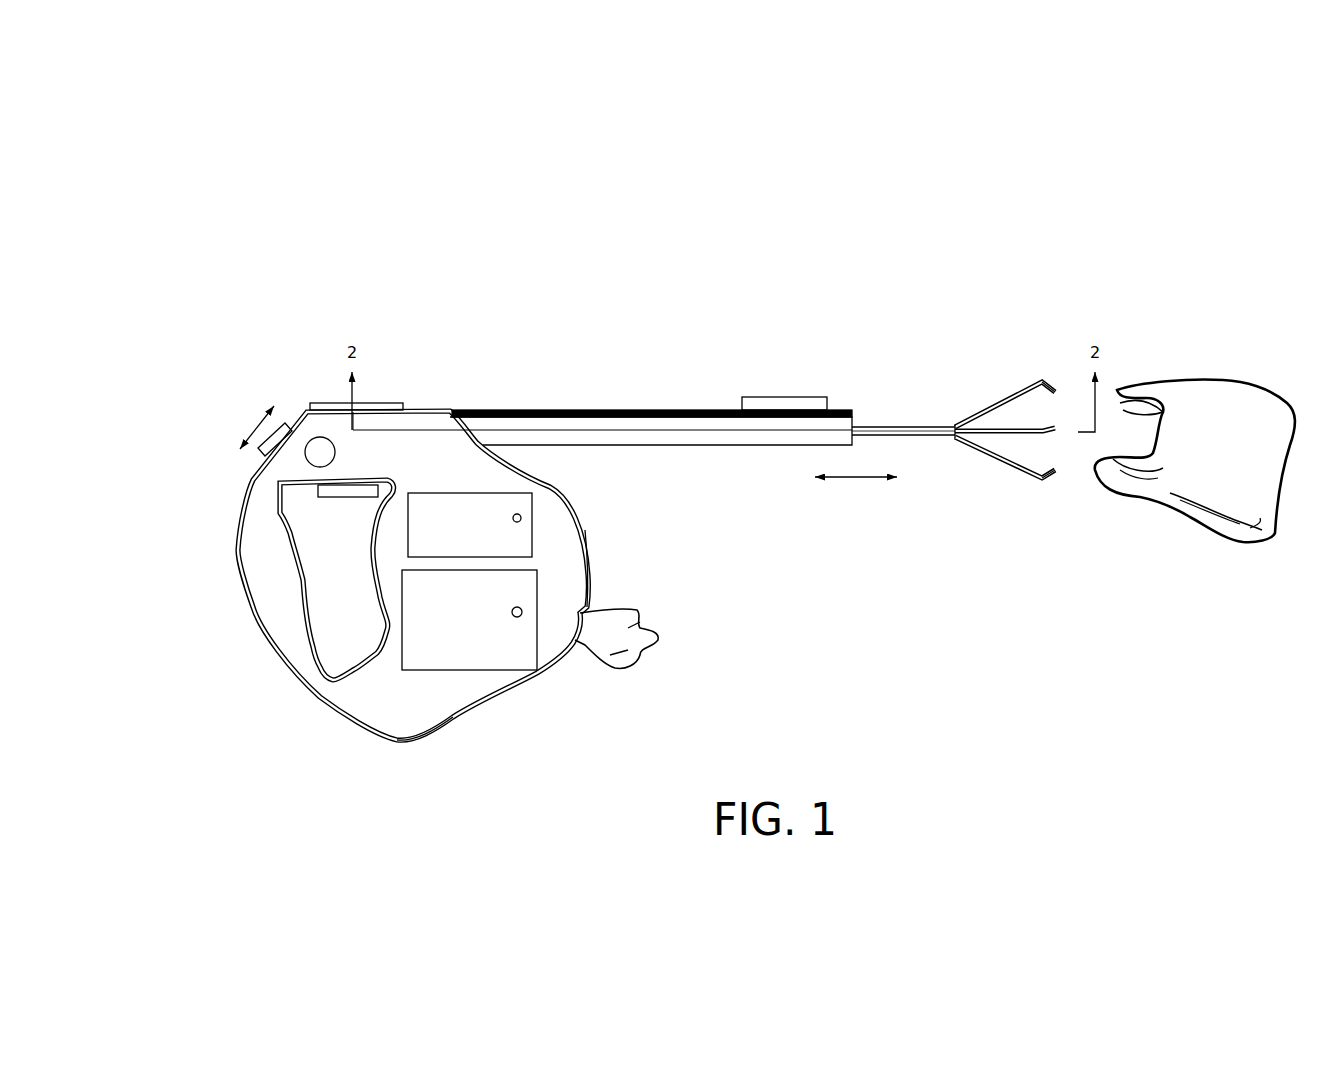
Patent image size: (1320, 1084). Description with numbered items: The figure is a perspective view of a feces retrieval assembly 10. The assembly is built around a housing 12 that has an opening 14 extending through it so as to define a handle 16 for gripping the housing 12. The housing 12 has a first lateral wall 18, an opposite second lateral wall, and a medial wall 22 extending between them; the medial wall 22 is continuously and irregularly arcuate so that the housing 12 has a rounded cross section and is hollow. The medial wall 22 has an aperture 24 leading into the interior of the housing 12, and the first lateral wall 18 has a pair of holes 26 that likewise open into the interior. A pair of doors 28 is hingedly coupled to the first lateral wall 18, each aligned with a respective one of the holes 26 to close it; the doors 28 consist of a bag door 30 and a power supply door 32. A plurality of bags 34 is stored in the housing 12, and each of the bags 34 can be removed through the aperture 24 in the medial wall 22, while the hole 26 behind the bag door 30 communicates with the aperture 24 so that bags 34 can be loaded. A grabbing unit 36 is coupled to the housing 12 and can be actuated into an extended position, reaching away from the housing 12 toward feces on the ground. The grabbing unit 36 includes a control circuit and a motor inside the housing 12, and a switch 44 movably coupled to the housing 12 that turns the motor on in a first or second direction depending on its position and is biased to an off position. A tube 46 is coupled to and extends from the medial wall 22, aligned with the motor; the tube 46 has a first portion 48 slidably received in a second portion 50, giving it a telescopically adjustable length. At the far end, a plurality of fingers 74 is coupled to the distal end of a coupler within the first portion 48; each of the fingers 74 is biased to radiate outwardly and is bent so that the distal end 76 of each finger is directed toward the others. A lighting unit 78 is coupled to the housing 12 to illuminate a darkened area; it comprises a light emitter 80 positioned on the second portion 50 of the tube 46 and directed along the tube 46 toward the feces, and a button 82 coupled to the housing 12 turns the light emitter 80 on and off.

The feces retrieval assembly 10 is at (633, 256).
The housing 12 is at (238, 550).
The opening 14 is at (348, 668).
The handle 16 is at (278, 620).
The first lateral wall 18 is at (453, 697).
The medial wall 22 is at (588, 572).
The aperture 24 is at (588, 640).
The holes 26 is at (533, 587).
The doors 28 is at (413, 590).
The bag door 30 is at (510, 650).
The power supply door 32 is at (475, 515).
The bags 34 is at (1248, 412).
The grabbing unit 36 is at (673, 398).
The switch 44 is at (270, 435).
The tube 46 is at (722, 417).
The first portion 48 is at (917, 427).
The second portion 50 is at (725, 445).
The fingers 74 is at (993, 437).
The distal end 76 is at (1057, 390).
The lighting unit 78 is at (782, 390).
The light emitter 80 is at (810, 397).
The button 82 is at (318, 437).